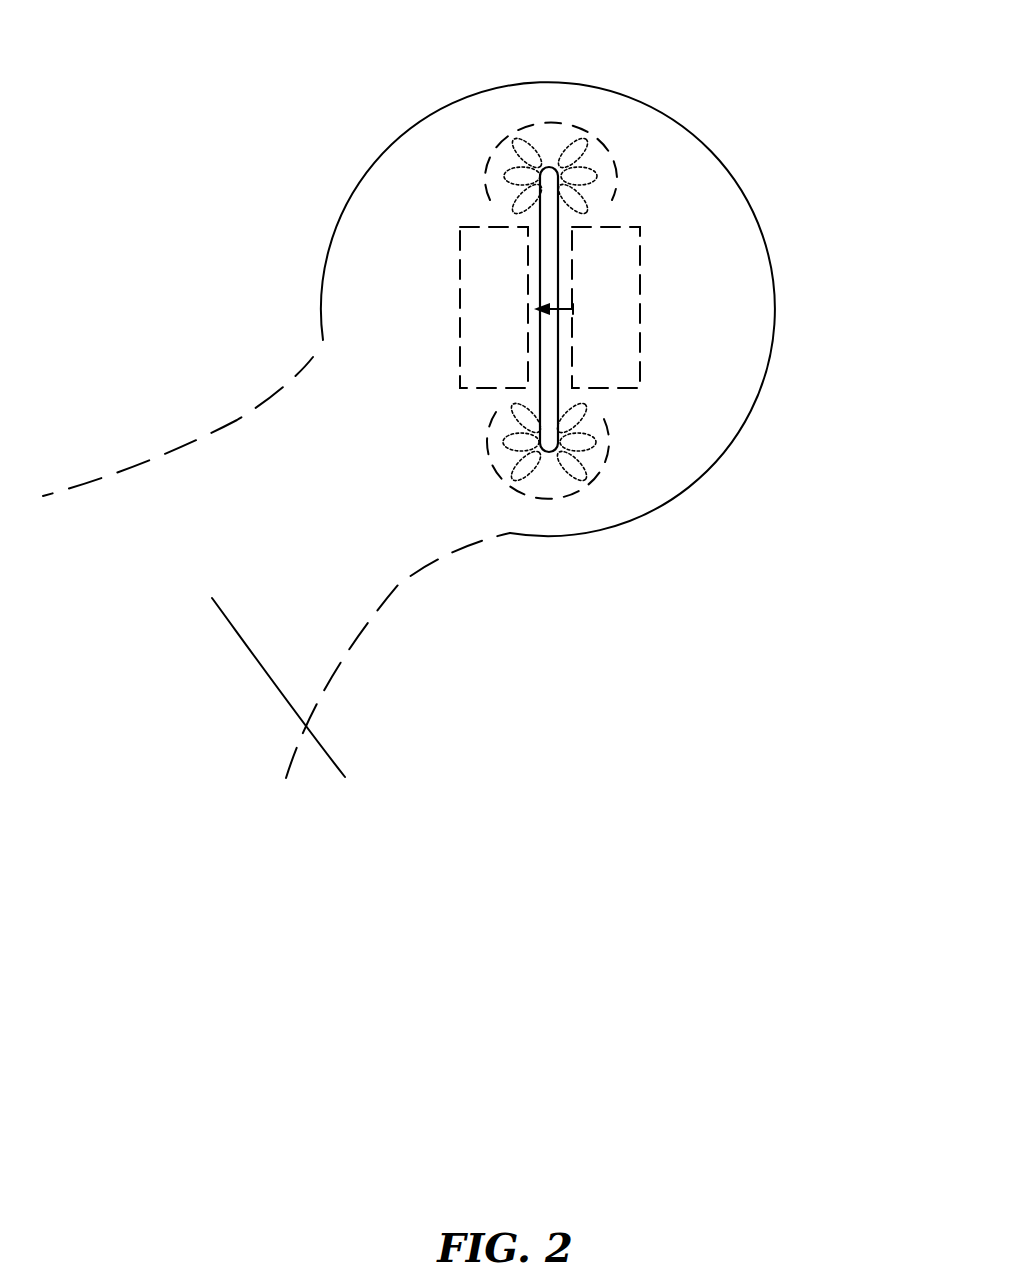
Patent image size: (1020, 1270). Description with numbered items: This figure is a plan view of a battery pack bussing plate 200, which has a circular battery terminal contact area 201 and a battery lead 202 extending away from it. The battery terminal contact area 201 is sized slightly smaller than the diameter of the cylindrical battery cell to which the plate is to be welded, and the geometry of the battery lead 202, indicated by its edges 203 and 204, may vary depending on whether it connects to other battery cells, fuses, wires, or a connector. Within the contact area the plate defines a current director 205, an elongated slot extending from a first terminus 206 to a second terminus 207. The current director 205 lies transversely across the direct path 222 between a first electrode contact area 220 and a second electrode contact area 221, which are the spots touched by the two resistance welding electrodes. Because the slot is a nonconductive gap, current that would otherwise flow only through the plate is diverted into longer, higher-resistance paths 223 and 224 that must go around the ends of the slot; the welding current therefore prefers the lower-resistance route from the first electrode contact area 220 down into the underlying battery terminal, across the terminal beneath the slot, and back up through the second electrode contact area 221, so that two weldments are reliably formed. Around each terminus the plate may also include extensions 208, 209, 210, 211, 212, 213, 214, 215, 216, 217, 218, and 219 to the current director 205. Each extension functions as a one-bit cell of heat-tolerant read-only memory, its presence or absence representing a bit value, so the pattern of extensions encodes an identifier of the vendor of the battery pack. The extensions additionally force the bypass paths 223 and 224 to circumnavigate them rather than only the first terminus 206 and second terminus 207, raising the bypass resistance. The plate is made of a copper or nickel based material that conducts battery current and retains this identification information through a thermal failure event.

The battery pack bussing plate 200 is at (150, 55).
The battery terminal contact area 201 is at (713, 300).
The battery lead 202 is at (293, 702).
The edge 203 is at (236, 420).
The edge 204 is at (375, 608).
The current director 205 is at (560, 219).
The first terminus 206 is at (551, 165).
The second terminus 207 is at (549, 452).
The extension 208 is at (503, 205).
The extension 209 is at (503, 177).
The extension 210 is at (513, 143).
The extension 211 is at (590, 143).
The extension 212 is at (614, 176).
The extension 213 is at (592, 209).
The extension 214 is at (513, 408).
The extension 215 is at (504, 442).
The extension 216 is at (507, 483).
The extension 217 is at (590, 470).
The extension 218 is at (597, 443).
The extension 219 is at (588, 412).
The first electrode contact area 220 is at (642, 283).
The second electrode contact area 221 is at (460, 273).
The direct path 222 is at (573, 309).
The longer path 223 is at (543, 124).
The longer path 224 is at (592, 488).